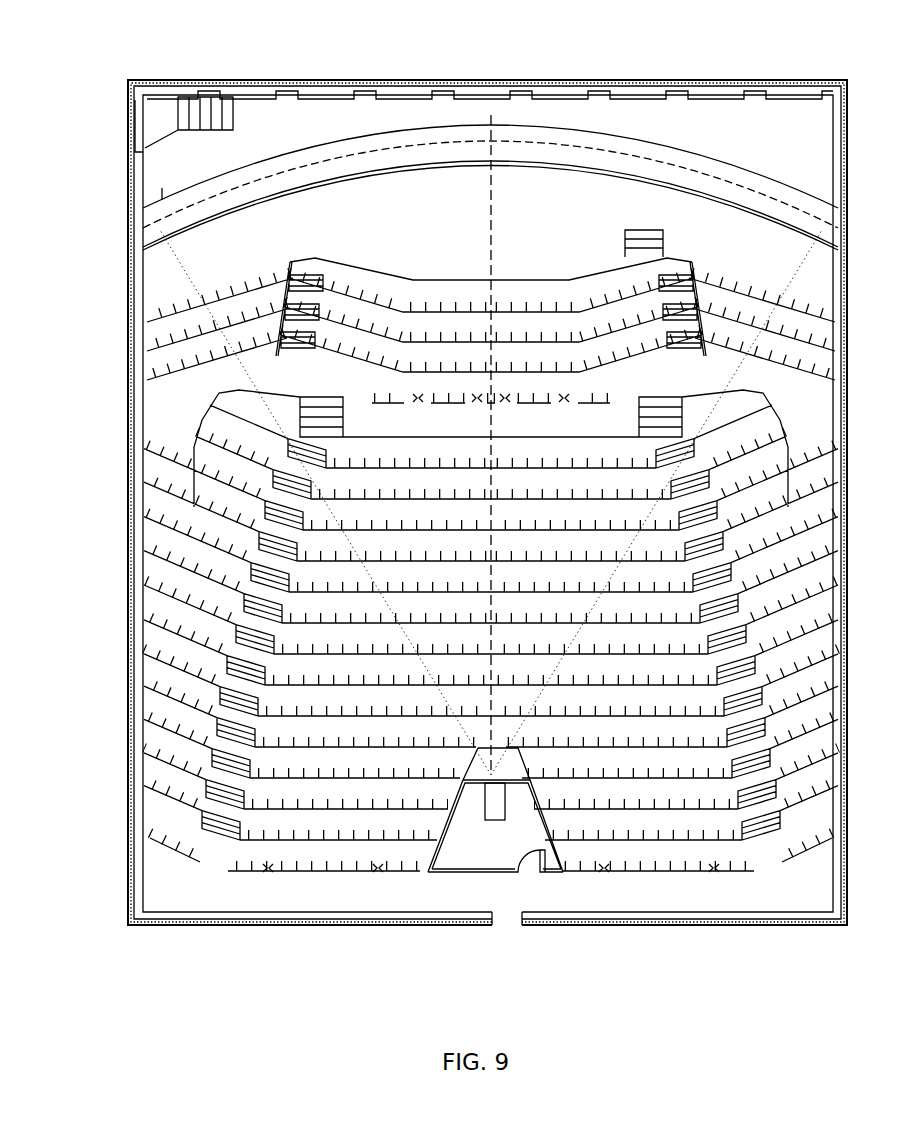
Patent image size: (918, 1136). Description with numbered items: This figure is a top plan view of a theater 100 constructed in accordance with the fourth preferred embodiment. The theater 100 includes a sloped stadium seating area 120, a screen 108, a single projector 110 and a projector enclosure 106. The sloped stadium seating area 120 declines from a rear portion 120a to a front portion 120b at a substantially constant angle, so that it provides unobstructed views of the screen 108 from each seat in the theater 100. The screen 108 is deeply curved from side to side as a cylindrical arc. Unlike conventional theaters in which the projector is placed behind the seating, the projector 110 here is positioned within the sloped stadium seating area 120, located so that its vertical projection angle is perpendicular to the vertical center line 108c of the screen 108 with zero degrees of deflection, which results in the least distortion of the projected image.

The theater 100 is at (680, 74).
The screen 108 is at (288, 190).
The vertical center line 108c is at (491, 160).
The front portion 120b is at (290, 265).
The sloped stadium seating area 120 is at (210, 548).
The rear portion 120a is at (228, 872).
The projector enclosure 106 is at (462, 868).
The projector 110 is at (498, 822).